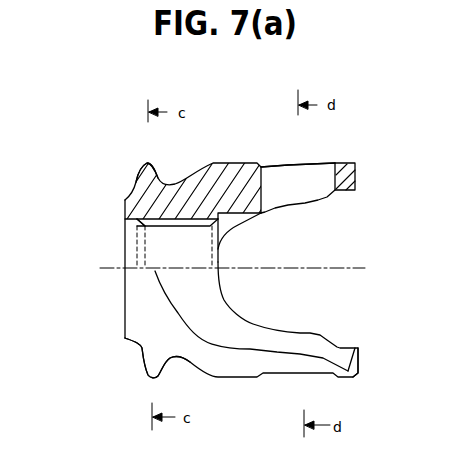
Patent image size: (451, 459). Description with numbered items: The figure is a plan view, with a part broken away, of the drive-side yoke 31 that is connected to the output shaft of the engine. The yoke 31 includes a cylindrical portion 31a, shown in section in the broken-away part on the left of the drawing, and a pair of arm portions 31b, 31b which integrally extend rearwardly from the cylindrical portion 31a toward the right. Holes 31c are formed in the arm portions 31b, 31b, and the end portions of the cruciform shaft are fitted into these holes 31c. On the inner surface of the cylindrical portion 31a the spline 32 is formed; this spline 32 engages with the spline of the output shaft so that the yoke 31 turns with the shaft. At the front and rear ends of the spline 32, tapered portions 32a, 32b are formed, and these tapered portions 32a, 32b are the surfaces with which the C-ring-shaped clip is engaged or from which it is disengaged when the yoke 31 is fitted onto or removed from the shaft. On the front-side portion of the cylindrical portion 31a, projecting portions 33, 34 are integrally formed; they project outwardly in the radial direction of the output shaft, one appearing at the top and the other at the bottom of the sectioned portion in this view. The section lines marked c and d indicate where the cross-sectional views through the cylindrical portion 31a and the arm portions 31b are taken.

The yoke 31 is at (219, 221).
The cylindrical portion 31a is at (125, 210).
The arm portion 31b is at (355, 182).
The hole 31c is at (307, 175).
The spline 32 is at (171, 226).
The tapered portion 32a is at (138, 226).
The tapered portion 32b is at (265, 237).
The projecting portion 33 is at (145, 165).
The projecting portion 34 is at (145, 370).